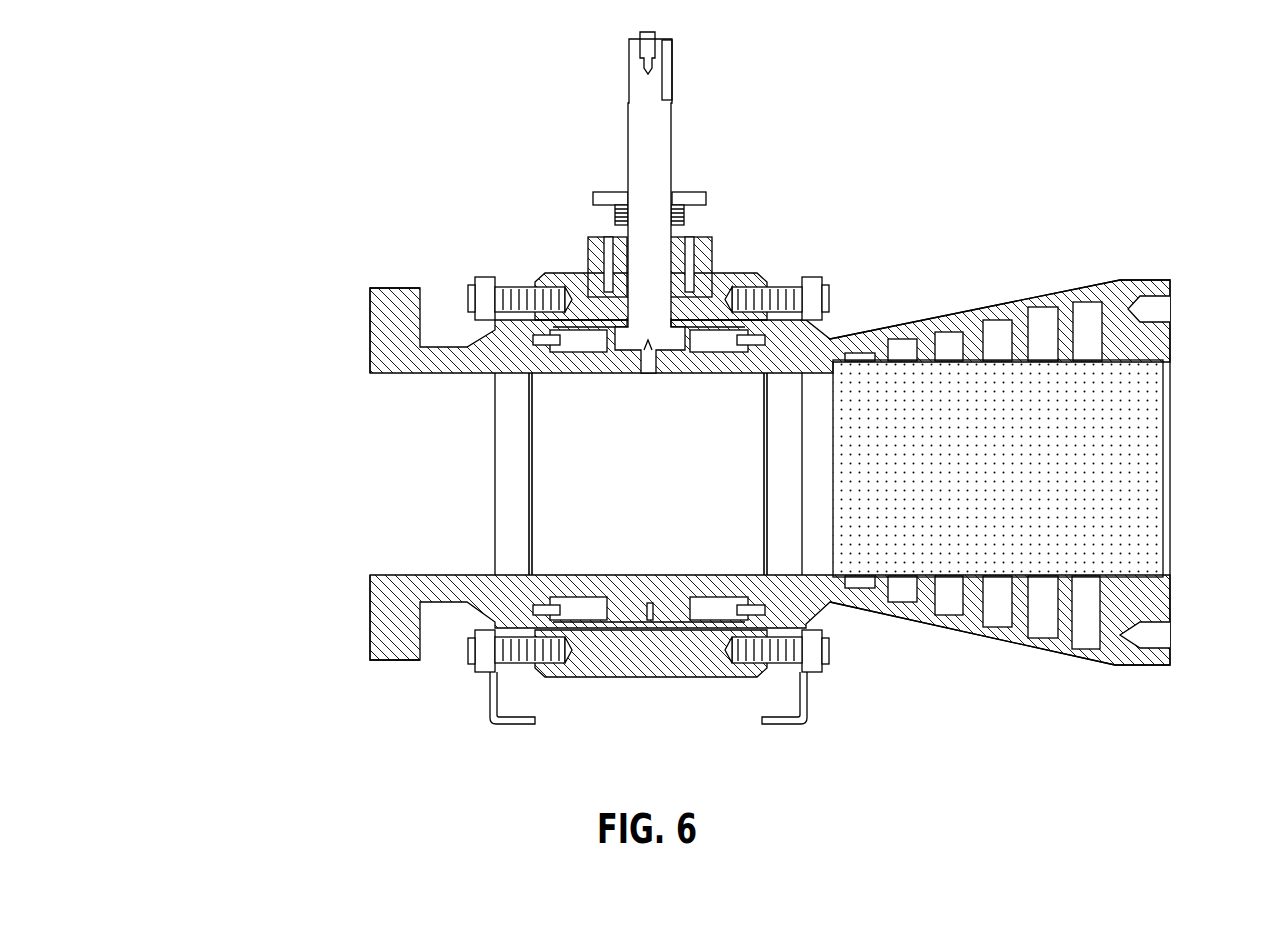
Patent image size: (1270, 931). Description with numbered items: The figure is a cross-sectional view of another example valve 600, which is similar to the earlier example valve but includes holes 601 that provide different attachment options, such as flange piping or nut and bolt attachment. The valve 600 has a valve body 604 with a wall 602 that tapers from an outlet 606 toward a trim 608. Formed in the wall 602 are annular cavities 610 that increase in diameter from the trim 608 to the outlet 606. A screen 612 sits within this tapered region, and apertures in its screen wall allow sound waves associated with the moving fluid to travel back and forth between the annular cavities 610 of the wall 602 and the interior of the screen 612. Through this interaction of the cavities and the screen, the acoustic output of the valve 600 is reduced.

The valve 600 is at (225, 76).
The holes 601 is at (1160, 295).
The wall 602 is at (978, 638).
The valve body 604 is at (372, 365).
The outlet 606 is at (1172, 438).
The trim 608 is at (530, 488).
The annular cavities 610 is at (1087, 302).
The screen 612 is at (1140, 358).